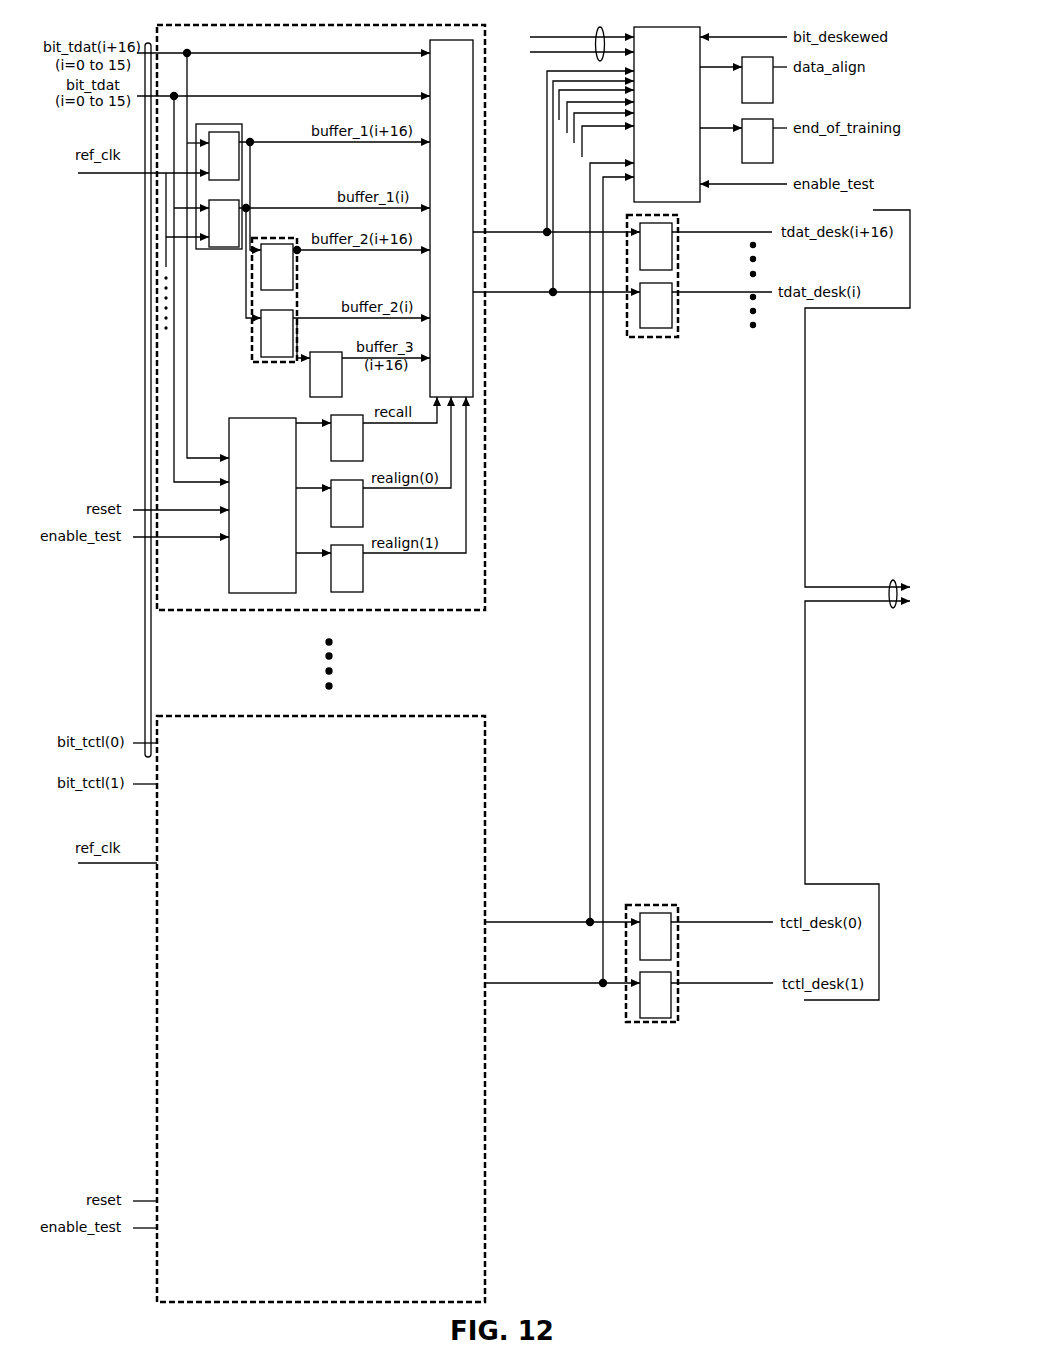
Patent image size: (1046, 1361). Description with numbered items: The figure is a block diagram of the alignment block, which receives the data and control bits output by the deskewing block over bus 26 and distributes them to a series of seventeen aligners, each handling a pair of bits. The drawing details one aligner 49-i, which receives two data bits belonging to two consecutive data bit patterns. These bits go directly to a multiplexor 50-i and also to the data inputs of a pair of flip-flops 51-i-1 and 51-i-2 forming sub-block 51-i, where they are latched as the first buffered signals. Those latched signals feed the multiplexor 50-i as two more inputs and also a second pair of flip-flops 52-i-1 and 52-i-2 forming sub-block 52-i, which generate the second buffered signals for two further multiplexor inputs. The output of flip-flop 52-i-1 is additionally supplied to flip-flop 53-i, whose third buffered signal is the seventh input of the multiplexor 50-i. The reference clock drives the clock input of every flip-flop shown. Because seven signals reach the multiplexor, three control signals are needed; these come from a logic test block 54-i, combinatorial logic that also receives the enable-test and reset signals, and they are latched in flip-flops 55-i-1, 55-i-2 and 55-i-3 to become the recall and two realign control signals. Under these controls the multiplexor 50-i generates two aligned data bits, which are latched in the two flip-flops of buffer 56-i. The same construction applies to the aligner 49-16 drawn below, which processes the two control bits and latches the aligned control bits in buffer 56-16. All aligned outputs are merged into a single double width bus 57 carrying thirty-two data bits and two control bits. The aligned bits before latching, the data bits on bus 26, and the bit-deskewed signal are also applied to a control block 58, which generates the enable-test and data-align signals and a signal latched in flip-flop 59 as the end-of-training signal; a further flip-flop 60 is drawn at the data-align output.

The bus 26 is at (146, 42).
The aligner 49-i is at (486, 592).
The aligner 49-16 is at (486, 1283).
The multiplexor 50-i is at (473, 325).
The sub-block 51-i is at (236, 124).
The flip-flop 51-i-1 is at (240, 162).
The flip-flop 51-i-2 is at (240, 225).
The sub-block 52-i is at (252, 339).
The flip-flop 52-i-1 is at (293, 262).
The flip-flop 52-i-2 is at (293, 328).
The flip-flop 53-i is at (342, 383).
The logic test block 54-i is at (229, 576).
The flip-flop 55-i-1 is at (363, 440).
The flip-flop 55-i-2 is at (363, 505).
The flip-flop 55-i-3 is at (363, 570).
The buffer 56-i is at (638, 341).
The buffer 56-16 is at (625, 1013).
The double width bus 57 is at (893, 608).
The control block 58 is at (700, 200).
The flip-flop 59 is at (773, 152).
The data align flip-flop 60 is at (773, 90).